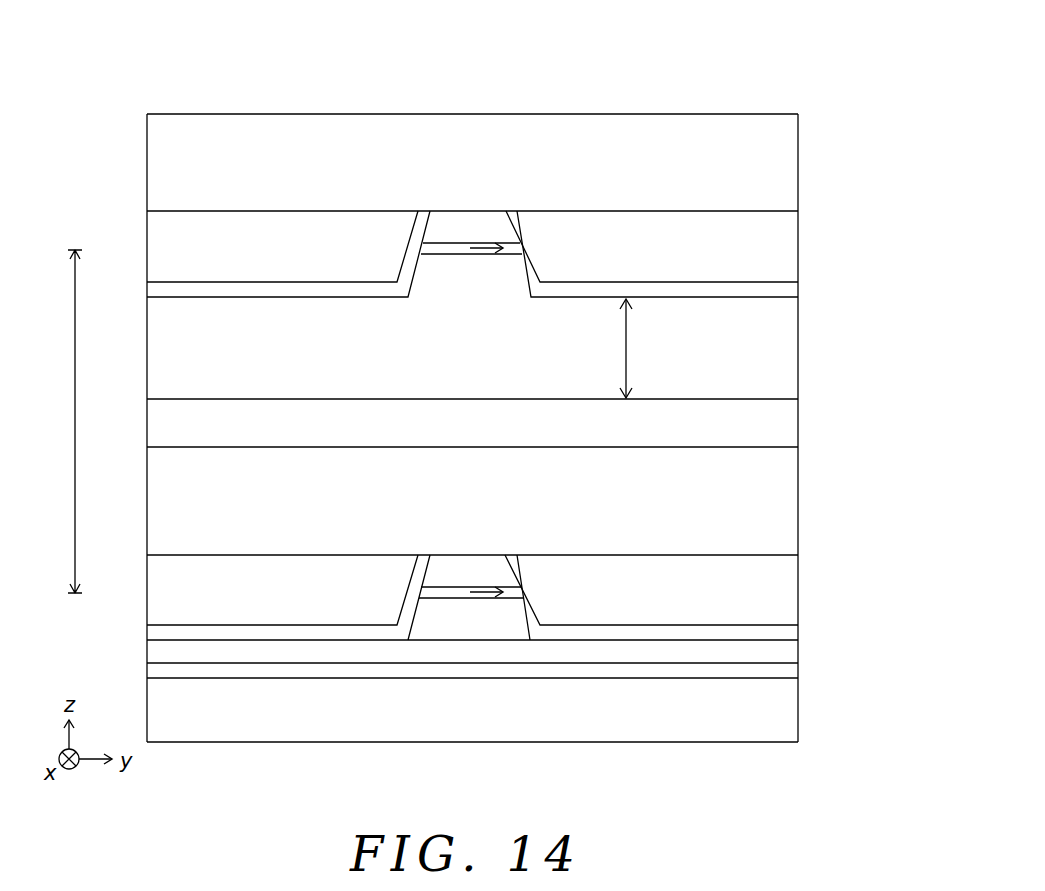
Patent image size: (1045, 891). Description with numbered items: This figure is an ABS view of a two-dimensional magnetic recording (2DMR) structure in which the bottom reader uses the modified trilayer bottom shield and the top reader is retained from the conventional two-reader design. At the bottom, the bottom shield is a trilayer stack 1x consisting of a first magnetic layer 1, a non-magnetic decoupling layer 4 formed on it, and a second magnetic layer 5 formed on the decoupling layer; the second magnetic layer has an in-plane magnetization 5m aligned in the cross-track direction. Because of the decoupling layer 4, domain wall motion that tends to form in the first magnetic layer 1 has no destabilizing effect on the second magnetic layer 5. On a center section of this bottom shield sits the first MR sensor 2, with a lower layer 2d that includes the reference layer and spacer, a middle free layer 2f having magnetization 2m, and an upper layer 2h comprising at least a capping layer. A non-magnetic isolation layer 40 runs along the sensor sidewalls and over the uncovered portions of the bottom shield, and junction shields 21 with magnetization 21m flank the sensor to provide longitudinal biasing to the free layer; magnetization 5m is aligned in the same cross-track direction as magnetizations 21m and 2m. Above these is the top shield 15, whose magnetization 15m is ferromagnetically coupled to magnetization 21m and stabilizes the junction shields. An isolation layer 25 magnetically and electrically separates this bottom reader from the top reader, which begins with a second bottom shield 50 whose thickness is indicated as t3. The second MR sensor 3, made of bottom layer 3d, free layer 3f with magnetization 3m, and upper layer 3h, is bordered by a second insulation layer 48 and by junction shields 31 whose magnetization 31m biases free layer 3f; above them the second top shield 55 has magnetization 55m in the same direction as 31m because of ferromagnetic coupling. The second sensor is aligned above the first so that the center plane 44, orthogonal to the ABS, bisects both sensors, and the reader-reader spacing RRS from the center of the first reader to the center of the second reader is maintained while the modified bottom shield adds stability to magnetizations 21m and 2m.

The first magnetic layer 1 is at (782, 695).
The trilayer stack 1x is at (857, 642).
The non-magnetic decoupling layer 4 is at (158, 671).
The second magnetic layer 5 is at (782, 651).
The in-plane magnetization 5m is at (568, 655).
The non-magnetic isolation layer 40 is at (162, 631).
The junction shields 21 is at (162, 592).
The magnetization 21m is at (333, 592).
The top shield 15 is at (782, 497).
The magnetization 15m is at (658, 507).
The isolation layer 25 is at (782, 422).
The second bottom shield 50 is at (782, 346).
The thickness of insulating layer t3 is at (635, 348).
The second insulation layer 48 is at (162, 287).
The junction shields 31 is at (163, 244).
The magnetization 31m is at (333, 249).
The second top shield 55 is at (782, 162).
The magnetization 55m is at (637, 168).
The MR sensor 2 is at (448, 775).
The upper layer 2h is at (438, 577).
The lower layer 2d is at (443, 630).
The middle free layer 2f is at (459, 593).
The magnetization 2m is at (488, 598).
The second MR sensor 3 is at (450, 72).
The bottom layer 3d is at (440, 263).
The upper layer 3h is at (448, 227).
The free layer 3f is at (463, 243).
The magnetization of second magnetic element 3m is at (490, 248).
The center plane 44 is at (466, 765).
The reader-reader spacing RRS is at (95, 421).